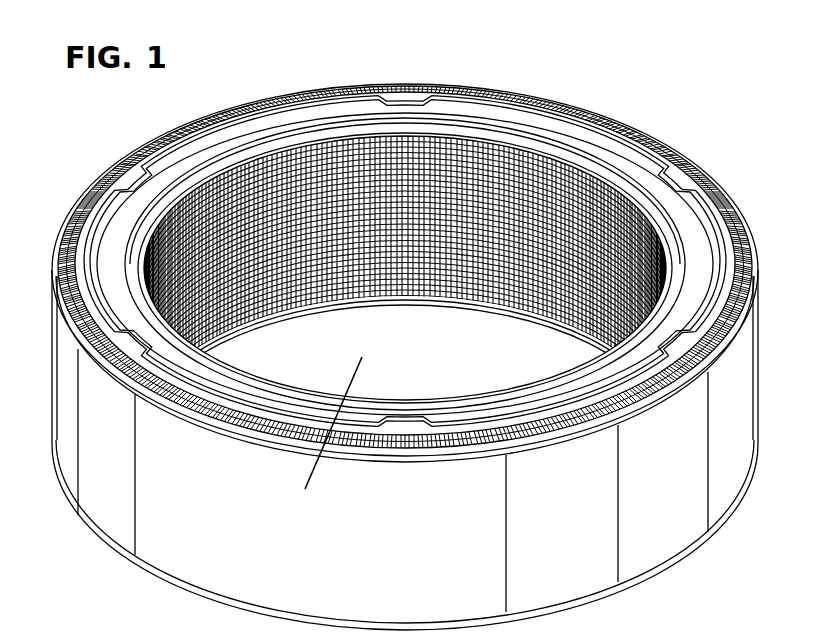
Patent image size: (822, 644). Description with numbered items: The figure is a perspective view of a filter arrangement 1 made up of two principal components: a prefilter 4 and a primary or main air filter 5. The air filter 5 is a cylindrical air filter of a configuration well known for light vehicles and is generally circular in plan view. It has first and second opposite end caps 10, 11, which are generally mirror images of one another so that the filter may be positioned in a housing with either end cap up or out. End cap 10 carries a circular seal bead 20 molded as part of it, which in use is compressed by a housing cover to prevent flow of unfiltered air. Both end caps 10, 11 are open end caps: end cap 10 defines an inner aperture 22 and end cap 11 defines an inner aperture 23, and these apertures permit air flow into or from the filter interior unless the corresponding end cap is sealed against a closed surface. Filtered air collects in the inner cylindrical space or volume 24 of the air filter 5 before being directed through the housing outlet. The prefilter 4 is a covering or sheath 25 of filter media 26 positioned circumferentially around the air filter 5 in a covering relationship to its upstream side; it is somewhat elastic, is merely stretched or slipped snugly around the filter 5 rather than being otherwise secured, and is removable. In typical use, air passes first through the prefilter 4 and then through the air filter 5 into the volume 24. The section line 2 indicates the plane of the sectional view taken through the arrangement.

The filter arrangement 1 is at (736, 174).
The section line 2- 2 is at (410, 390).
The prefilter 4 is at (729, 467).
The primary or main air filter 5 is at (611, 153).
The end cap 10 is at (228, 138).
The end cap 11 is at (277, 322).
The seal bead 20 is at (664, 210).
The inner aperture 22 is at (345, 130).
The inner aperture 23 is at (393, 303).
The inner cylindrical space or volume 24 is at (526, 195).
The covering or sheath 25 is at (115, 519).
The filter media 26 is at (88, 417).